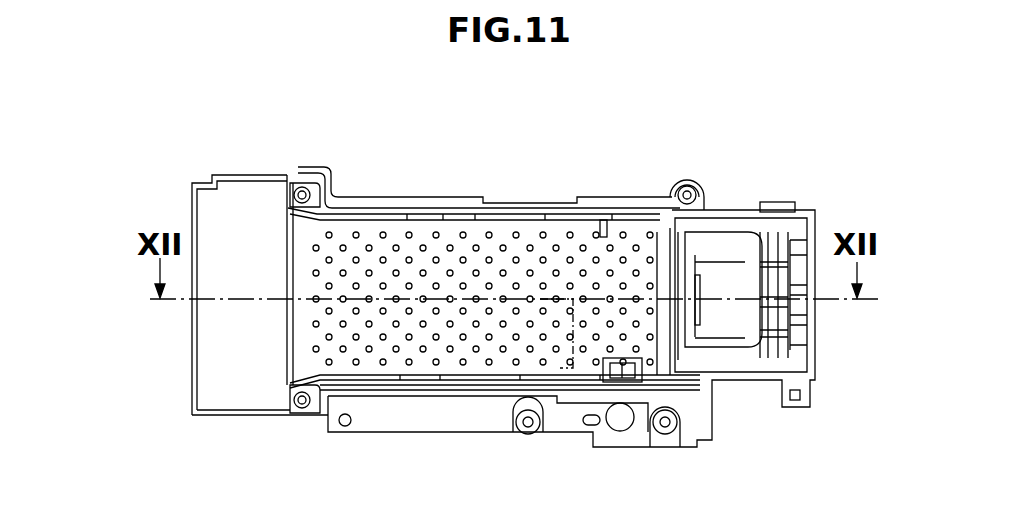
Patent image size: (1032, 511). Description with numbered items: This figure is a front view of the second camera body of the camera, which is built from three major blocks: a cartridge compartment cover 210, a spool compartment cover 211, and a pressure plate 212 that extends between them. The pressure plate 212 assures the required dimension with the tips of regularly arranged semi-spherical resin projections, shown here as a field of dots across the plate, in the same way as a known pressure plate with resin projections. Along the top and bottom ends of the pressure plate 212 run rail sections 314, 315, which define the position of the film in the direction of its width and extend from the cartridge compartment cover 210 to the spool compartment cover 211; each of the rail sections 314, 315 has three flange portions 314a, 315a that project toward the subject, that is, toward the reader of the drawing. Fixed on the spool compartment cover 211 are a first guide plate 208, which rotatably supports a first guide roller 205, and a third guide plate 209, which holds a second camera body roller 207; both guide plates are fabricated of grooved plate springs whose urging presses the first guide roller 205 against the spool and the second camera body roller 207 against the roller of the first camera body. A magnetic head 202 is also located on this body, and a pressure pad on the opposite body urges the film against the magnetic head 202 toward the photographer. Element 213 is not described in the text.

The cartridge compartment cover 210 is at (296, 114).
The spool compartment cover 211 is at (815, 113).
The magnetic head 202 is at (625, 383).
The first guide roller 205 is at (772, 343).
The second camera body roller 207 is at (703, 222).
The first guide plate 208 is at (735, 370).
The third guide plate 209 is at (735, 245).
The pressure plate 212 is at (515, 245).
The pin 213 is at (605, 225).
The rail section 314 is at (373, 213).
The flange portion 314a is at (475, 213).
The rail section 315 is at (375, 380).
The flange portion 315a is at (523, 383).